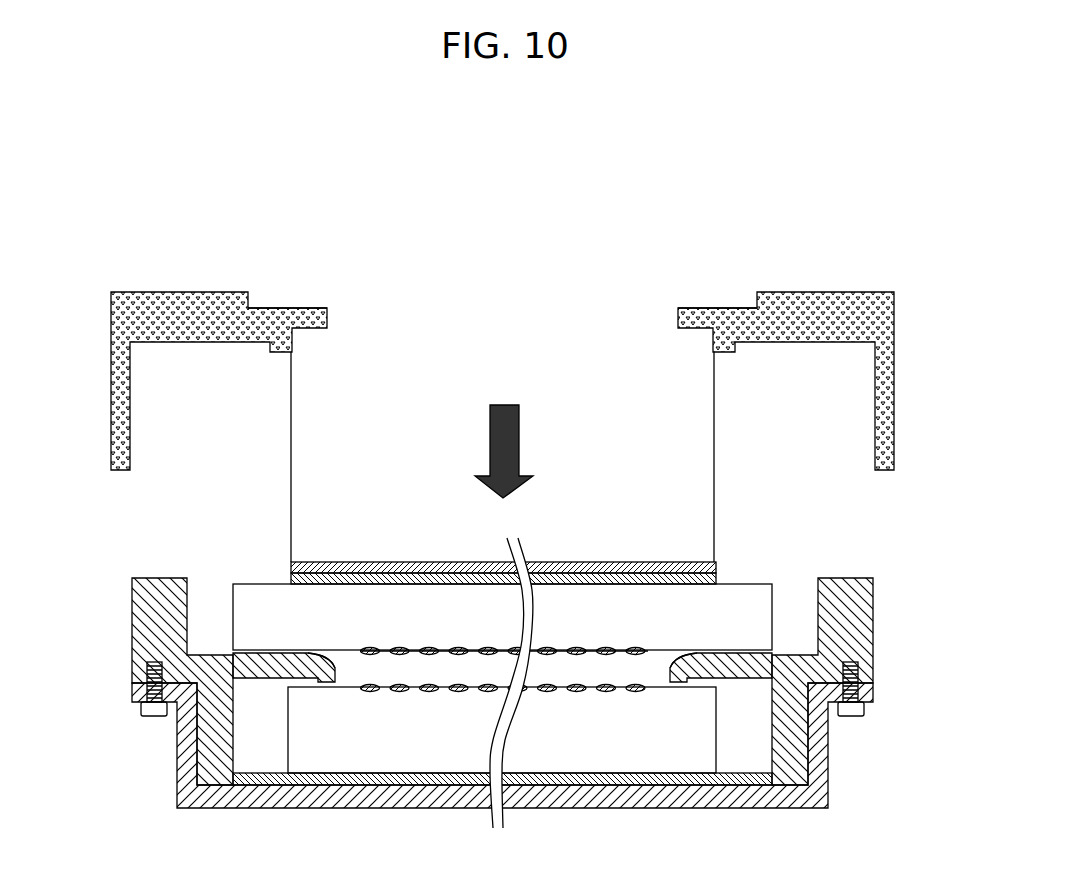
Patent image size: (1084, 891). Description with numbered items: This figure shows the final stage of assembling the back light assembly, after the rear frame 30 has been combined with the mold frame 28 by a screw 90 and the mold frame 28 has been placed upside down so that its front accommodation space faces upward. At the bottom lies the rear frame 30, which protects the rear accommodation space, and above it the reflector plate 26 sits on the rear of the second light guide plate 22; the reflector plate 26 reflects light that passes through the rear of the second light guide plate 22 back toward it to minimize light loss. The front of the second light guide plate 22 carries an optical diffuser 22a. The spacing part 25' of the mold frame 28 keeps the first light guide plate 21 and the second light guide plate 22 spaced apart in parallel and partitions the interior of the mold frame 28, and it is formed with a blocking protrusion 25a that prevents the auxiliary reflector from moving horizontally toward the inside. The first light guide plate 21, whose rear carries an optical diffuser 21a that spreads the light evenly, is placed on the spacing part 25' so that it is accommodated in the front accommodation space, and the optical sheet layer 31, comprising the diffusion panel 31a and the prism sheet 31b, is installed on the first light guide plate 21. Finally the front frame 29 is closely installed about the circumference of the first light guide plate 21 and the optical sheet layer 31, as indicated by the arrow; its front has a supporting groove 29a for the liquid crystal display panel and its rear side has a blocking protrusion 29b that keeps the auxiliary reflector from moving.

The first light guide plate 21 is at (737, 597).
The optical diffuser 21a is at (640, 648).
The second light guide plate 22 is at (573, 727).
The optical diffuser 22a is at (640, 690).
The spacing part 25' is at (506, 641).
The blocking protrusion 25a is at (308, 660).
The reflector plate 26 is at (552, 787).
The mold frame 28 is at (150, 621).
The front frame 29 is at (190, 292).
The supporting groove 29a is at (249, 306).
The blocking protrusion 29b is at (268, 348).
The rear frame 30 is at (452, 797).
The optical sheet layer 31 is at (503, 524).
The diffusion panel 31a is at (583, 501).
The prism sheet 31b is at (565, 562).
The screw 90 is at (154, 717).